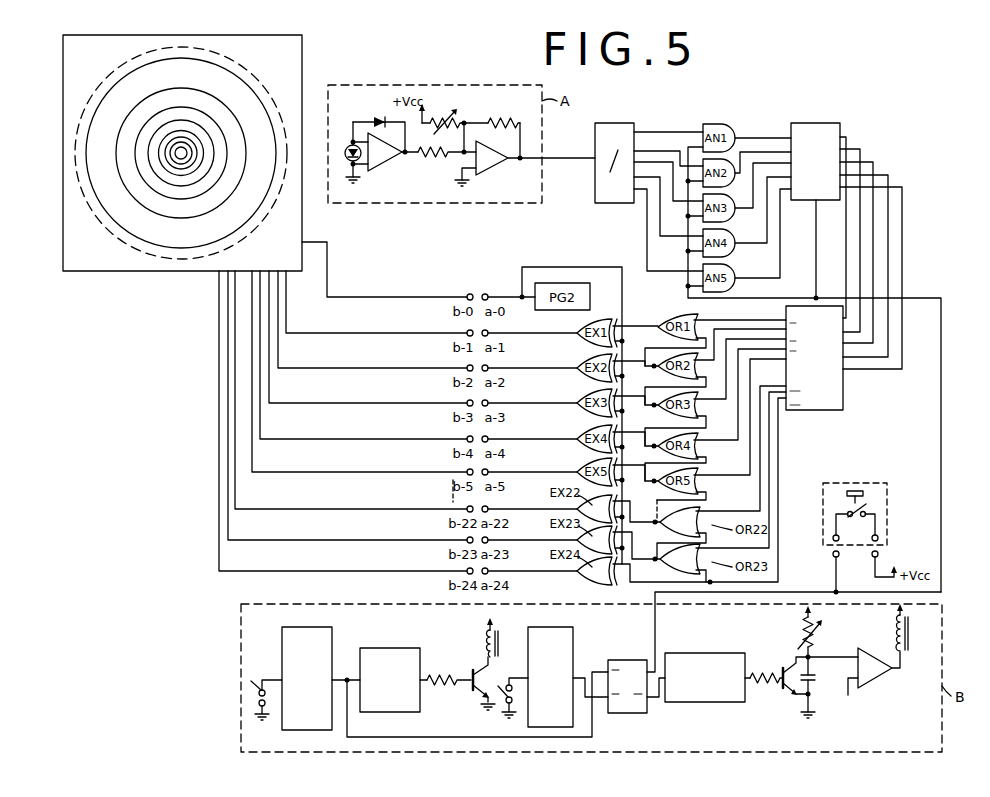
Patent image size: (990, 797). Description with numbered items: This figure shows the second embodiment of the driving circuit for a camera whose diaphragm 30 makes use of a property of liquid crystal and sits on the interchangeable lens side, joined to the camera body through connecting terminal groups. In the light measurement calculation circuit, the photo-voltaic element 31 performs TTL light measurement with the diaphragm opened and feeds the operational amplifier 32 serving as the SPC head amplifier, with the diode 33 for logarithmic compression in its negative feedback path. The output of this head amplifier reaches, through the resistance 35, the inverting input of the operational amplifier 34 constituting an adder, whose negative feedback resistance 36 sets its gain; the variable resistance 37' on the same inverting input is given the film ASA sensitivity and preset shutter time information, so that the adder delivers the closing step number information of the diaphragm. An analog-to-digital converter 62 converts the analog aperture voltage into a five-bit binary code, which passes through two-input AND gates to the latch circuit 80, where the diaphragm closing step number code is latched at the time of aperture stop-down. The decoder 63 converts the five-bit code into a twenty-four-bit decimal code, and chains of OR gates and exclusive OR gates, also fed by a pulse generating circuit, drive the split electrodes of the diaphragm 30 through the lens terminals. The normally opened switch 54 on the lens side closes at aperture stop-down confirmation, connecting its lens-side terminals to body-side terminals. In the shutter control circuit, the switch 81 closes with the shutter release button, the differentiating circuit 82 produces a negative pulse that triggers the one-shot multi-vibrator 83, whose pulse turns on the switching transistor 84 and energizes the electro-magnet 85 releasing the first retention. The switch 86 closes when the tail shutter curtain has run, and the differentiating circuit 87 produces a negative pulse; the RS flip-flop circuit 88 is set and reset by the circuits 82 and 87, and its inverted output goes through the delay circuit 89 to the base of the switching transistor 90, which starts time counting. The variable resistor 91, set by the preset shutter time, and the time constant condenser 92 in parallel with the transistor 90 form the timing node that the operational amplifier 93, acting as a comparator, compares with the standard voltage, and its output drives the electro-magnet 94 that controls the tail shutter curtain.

The diaphragm 30 is at (63, 216).
The photo-voltaic element 31 is at (349, 146).
The operational amplifier 32 is at (388, 163).
The diode 33 is at (378, 117).
The operational amplifier 34 is at (496, 165).
The resistance 35 is at (434, 157).
The negative feedback resistance 36 is at (504, 117).
The variable resistance 37' is at (441, 113).
The analog-to-digital converter 62 is at (609, 123).
The latch circuit 80 is at (820, 123).
The decoder 63 is at (843, 393).
The normally opened switch 54 is at (868, 510).
The switch 81 is at (259, 684).
The differentiating circuit 82 is at (310, 730).
The one-shot multi-vibrator 83 is at (403, 648).
The switching transistor 84 is at (481, 694).
The electro-magnet 85 is at (486, 643).
The switch 86 is at (506, 712).
The differentiating circuit 87 is at (573, 642).
The RS flip-flop circuit 88 is at (630, 660).
The delay circuit 89 is at (704, 702).
The switching transistor 90 is at (786, 689).
The variable resistor 91 is at (803, 633).
The time constant condenser 92 is at (816, 679).
The operational amplifier 93 is at (880, 678).
The electro-magnet 94 is at (911, 640).